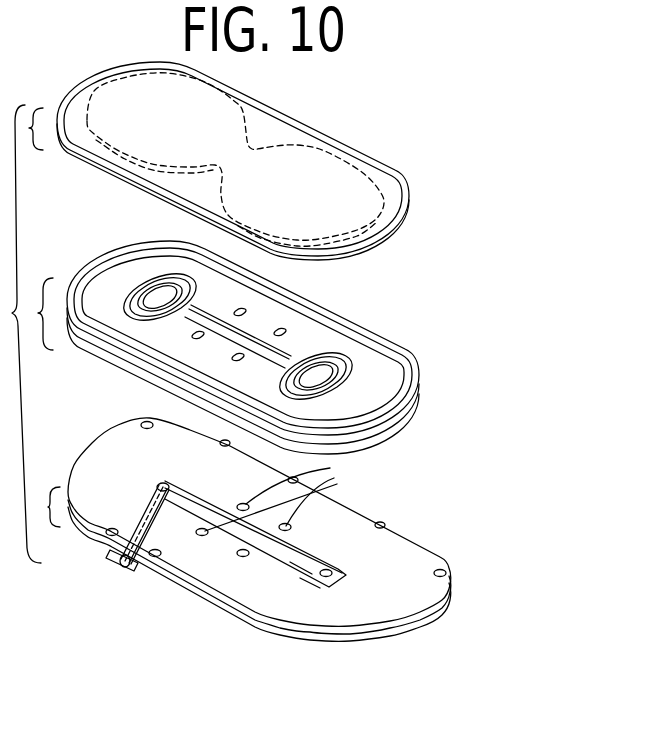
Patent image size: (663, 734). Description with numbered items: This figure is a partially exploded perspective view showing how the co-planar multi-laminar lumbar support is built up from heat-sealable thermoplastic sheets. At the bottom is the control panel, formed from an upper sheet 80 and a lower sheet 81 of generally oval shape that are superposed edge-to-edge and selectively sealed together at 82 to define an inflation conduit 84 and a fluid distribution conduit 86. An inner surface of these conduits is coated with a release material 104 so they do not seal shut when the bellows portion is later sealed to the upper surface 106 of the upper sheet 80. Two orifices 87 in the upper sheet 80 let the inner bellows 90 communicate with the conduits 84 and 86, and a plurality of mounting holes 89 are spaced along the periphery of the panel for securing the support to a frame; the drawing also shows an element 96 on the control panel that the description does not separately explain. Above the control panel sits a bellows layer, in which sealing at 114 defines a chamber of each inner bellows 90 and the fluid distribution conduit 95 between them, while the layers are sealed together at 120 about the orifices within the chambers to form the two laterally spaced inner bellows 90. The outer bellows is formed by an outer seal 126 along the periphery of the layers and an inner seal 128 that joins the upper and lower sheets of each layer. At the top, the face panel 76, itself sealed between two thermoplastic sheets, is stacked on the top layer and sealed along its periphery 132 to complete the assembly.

The face panel 76 is at (336, 157).
The upper sheet 80 is at (413, 540).
The lower sheet 81 is at (405, 614).
The seal 82 is at (190, 491).
The inflation conduit 84 is at (112, 553).
The fluid distribution conduit 86 is at (308, 550).
The orifices 87 is at (161, 481).
The mounting holes 89 is at (435, 568).
The inner bellows 90 is at (120, 285).
The fluid distribution conduits 95 is at (250, 323).
The spring wires 96 is at (284, 493).
The release material 104 is at (302, 568).
The upper surface 106 is at (126, 505).
The seal 114 is at (338, 357).
The seal 120 is at (178, 296).
The outer seal 126 is at (413, 373).
The inner seal 128 is at (138, 255).
The periphery 132 is at (403, 200).